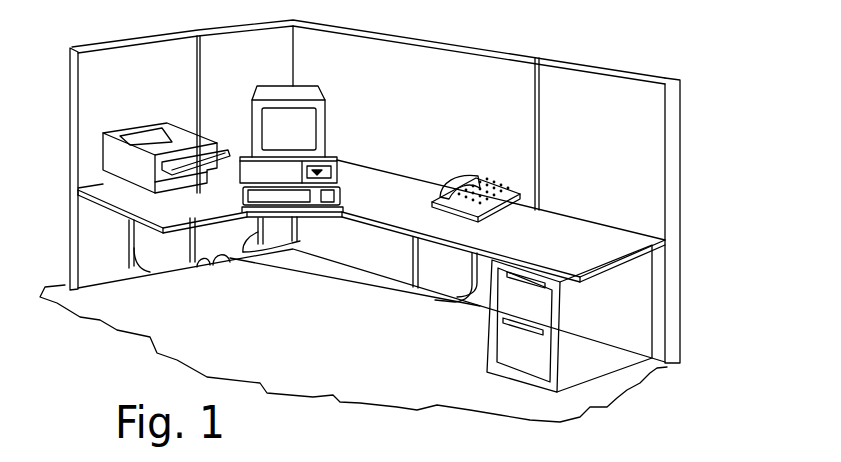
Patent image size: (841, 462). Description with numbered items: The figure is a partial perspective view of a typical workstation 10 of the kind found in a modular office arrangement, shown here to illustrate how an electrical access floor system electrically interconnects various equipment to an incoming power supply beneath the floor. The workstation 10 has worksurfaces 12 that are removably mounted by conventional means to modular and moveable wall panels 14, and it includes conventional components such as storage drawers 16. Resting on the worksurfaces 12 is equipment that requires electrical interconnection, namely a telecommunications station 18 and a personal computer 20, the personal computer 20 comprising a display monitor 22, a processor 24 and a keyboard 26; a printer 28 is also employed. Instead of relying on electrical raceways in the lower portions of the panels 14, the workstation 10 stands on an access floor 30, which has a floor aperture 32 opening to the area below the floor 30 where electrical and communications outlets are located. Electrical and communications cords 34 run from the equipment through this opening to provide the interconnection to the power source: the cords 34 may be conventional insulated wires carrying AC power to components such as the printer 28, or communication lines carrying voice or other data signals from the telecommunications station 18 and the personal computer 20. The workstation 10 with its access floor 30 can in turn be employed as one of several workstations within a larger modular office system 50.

The workstation 10 is at (583, 17).
The worksurfaces 12 is at (348, 173).
The wall panels 14 is at (139, 57).
The storage drawers 16 is at (513, 352).
The telecommunications station 18 is at (488, 160).
The personal computer 20 is at (335, 97).
The display monitor 22 is at (255, 98).
The processor 24 is at (245, 173).
The keyboard 26 is at (307, 220).
The printer 28 is at (140, 120).
The access floor 30 is at (298, 355).
The floor aperture 32 is at (205, 268).
The electrical and communications cords 34 is at (134, 250).
The office system 50 is at (748, 461).